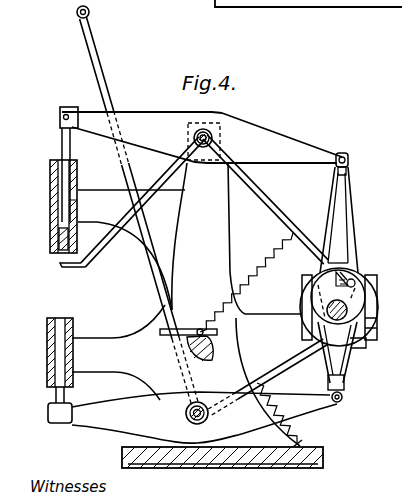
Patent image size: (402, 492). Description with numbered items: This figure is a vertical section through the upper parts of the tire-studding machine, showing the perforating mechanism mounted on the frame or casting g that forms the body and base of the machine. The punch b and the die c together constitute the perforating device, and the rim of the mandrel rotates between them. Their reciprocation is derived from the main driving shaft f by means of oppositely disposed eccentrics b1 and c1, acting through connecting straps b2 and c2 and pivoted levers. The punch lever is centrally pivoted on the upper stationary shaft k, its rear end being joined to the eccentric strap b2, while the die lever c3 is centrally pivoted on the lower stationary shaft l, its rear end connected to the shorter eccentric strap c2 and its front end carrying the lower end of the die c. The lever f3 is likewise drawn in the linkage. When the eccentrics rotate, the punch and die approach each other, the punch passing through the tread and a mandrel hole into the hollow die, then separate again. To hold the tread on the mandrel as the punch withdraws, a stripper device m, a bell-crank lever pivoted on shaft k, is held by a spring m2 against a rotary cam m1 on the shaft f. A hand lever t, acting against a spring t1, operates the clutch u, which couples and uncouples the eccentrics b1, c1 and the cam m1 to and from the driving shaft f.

The punch b is at (74, 186).
The link lever f3 is at (277, 144).
The stationary shaft k is at (211, 131).
The hand lever t is at (102, 76).
The stripper device m is at (268, 204).
The eccentric strap b2 is at (350, 222).
The clutch u is at (370, 292).
The eccentric c1 is at (352, 263).
The rotary cam m1 is at (356, 277).
The main driving shaft f is at (372, 322).
The eccentric b1 is at (360, 345).
The eccentric strap c2 is at (343, 376).
The spring m2 is at (268, 262).
The frame or casting g is at (320, 460).
The die lever c3 is at (288, 413).
The spring t1 is at (300, 443).
The lower stationary shaft l is at (186, 415).
The die c is at (72, 342).